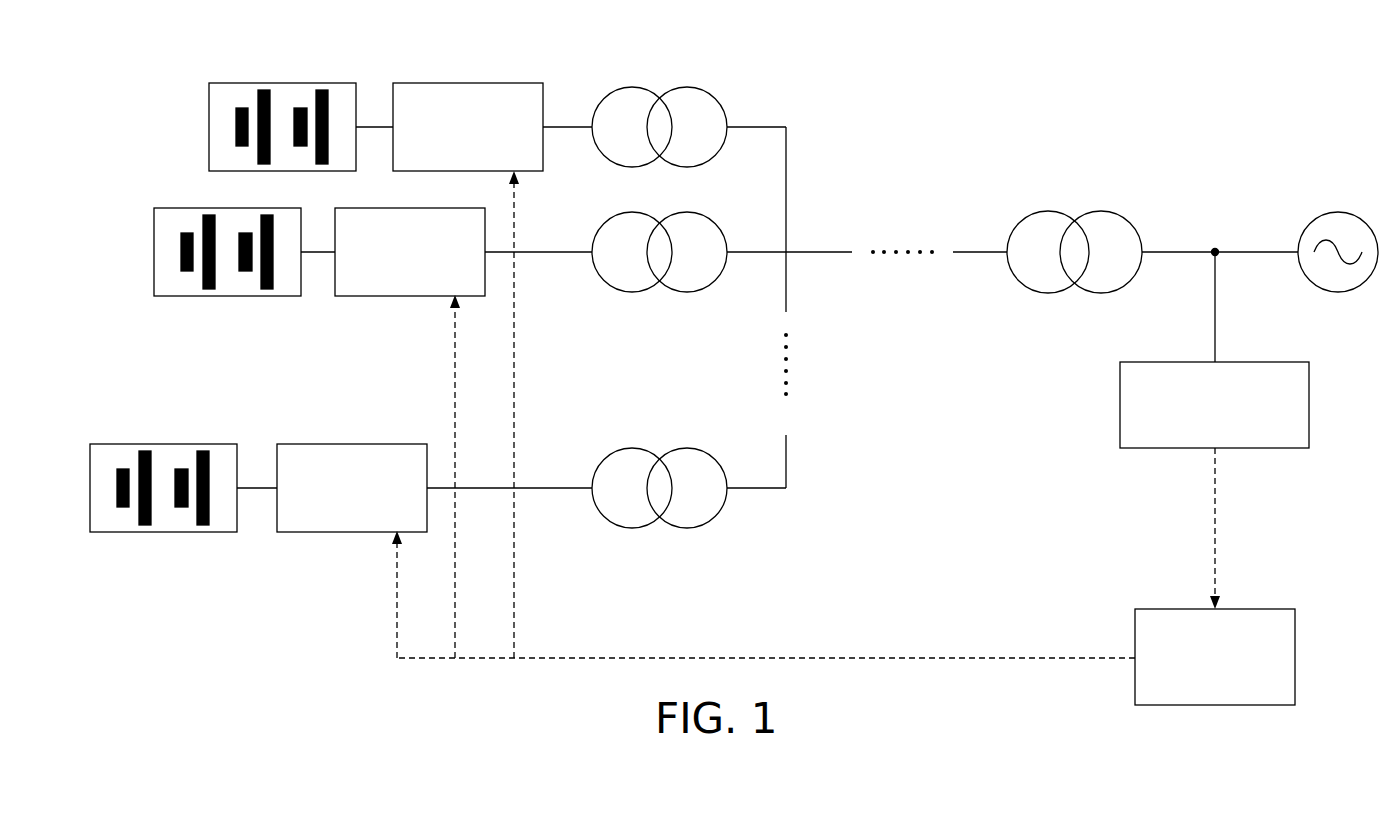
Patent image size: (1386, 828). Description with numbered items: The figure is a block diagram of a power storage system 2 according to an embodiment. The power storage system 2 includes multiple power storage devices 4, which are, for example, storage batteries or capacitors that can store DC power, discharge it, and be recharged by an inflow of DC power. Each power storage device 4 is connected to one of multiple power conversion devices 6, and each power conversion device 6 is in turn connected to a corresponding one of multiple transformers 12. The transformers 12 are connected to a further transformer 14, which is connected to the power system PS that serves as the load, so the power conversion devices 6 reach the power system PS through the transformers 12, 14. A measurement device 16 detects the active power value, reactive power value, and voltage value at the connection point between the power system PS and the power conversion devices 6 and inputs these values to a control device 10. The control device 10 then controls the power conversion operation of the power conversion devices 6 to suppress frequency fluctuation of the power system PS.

The power storage system 2 is at (1064, 98).
The power storage device 4 is at (238, 83).
The power conversion device 6 is at (432, 83).
The transformer 12 is at (717, 93).
The transformer 14 is at (1127, 213).
The measurement device 16 is at (1262, 362).
The control device 10 is at (1262, 609).
The power system PS is at (1336, 213).